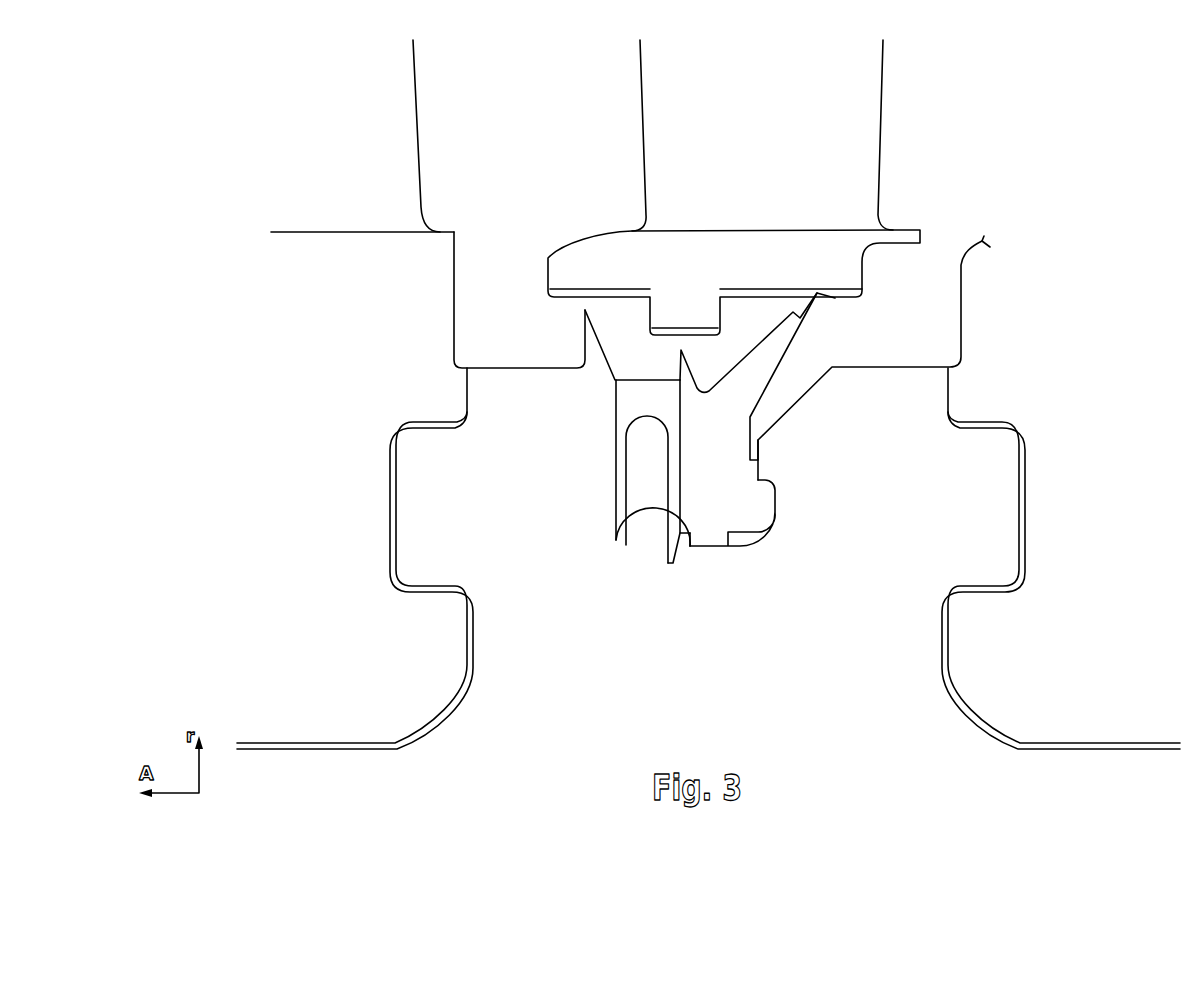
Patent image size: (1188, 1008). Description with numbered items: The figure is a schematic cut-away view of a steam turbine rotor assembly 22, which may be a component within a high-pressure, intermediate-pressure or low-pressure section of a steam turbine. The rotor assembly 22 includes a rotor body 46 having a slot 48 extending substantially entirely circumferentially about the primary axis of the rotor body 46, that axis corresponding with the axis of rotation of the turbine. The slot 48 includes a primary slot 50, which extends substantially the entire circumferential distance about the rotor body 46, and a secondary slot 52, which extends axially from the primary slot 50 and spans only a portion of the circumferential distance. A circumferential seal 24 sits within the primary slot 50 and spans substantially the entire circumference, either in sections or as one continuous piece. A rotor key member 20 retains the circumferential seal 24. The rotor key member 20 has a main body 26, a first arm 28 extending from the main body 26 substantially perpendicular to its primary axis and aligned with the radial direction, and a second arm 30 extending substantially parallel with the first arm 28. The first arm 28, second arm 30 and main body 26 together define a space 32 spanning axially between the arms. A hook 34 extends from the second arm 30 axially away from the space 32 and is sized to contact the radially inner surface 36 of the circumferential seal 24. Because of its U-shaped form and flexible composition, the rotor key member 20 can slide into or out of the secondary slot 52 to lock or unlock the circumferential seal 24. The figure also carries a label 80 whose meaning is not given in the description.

The rotor key member 20 is at (639, 501).
The steam turbine rotor assembly 22 is at (236, 114).
The circumferential seal 24 is at (730, 456).
The main body 26 is at (628, 395).
The first arm 28 is at (613, 497).
The second arm 30 is at (668, 483).
The space 32 is at (659, 540).
The hook 34 is at (675, 560).
The radially inner surface 36 is at (690, 548).
The rotor body 46 is at (849, 705).
The slot 48 is at (665, 612).
The primary slot 50 is at (742, 556).
The secondary slot 52 is at (613, 558).
The seal 80 is at (210, 487).